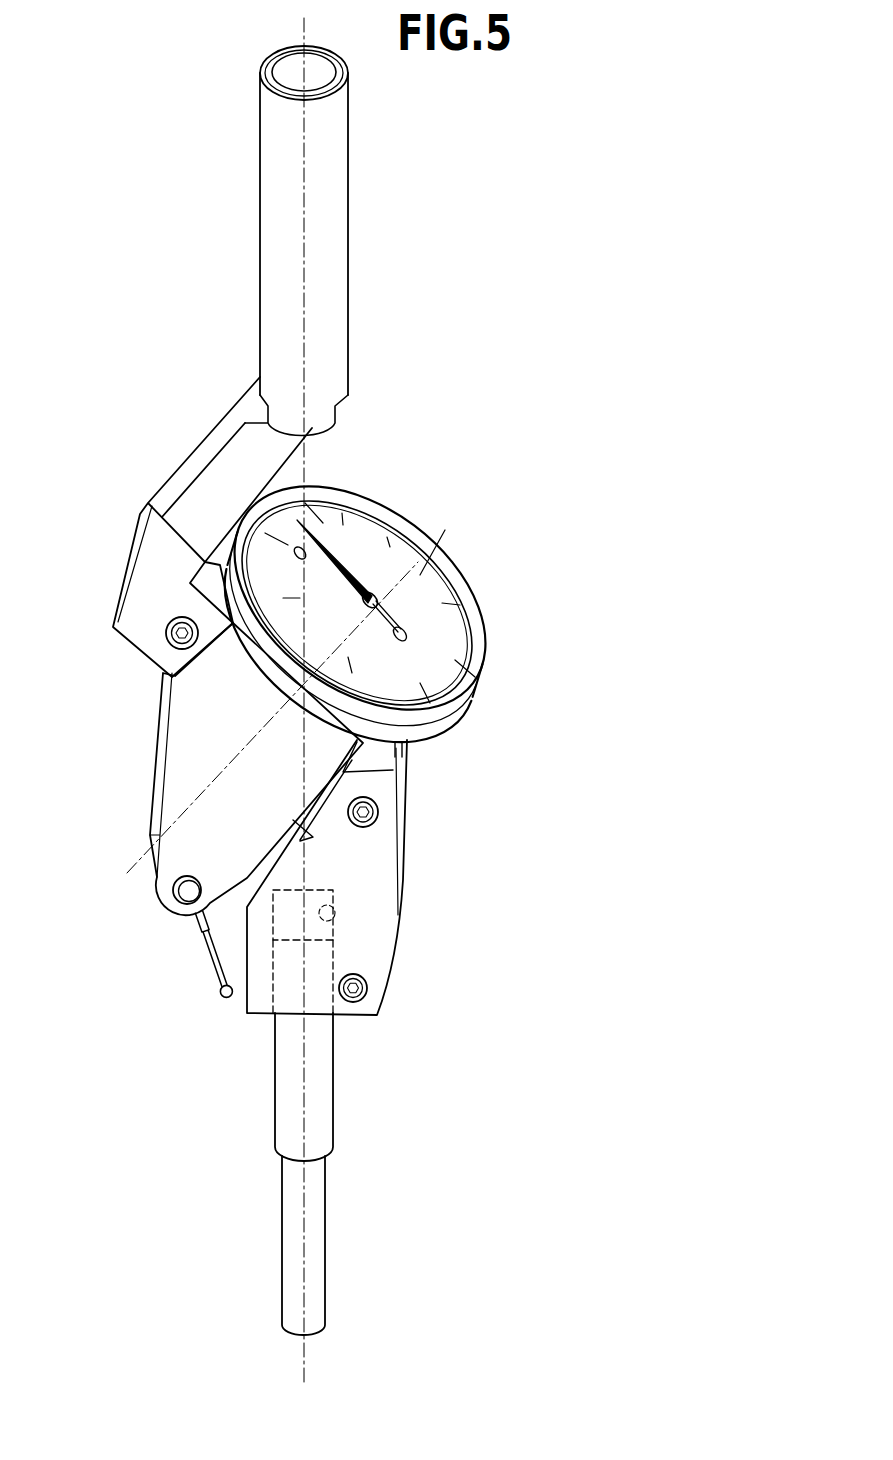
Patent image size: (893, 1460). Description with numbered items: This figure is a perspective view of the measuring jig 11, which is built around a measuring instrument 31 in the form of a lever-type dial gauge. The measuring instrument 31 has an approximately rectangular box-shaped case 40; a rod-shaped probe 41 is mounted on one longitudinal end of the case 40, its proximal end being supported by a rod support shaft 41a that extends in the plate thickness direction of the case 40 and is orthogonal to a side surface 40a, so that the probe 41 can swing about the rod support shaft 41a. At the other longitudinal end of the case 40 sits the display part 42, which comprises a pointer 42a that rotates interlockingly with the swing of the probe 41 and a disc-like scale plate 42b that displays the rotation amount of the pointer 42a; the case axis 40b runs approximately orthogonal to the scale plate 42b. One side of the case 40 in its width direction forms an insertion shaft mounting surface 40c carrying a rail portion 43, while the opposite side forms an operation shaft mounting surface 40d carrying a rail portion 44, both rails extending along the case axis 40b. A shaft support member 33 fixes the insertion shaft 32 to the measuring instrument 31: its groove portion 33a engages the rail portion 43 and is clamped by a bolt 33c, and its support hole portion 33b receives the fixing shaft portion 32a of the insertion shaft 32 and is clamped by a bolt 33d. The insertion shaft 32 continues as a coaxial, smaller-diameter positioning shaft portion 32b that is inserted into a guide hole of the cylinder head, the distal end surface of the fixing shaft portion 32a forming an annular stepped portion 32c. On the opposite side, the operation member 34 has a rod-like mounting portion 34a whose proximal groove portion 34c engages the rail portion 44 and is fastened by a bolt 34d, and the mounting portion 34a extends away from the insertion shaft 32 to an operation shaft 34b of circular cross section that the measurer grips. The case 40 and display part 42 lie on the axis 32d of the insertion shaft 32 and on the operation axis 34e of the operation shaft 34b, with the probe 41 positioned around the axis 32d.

The measuring jig 11 is at (94, 199).
The measuring instrument 31 is at (484, 620).
The insertion shaft 32 is at (282, 1253).
The fixing shaft portion 32a is at (275, 1078).
The positioning shaft portion 32b is at (282, 1288).
The annular stepped portion 32c is at (278, 1160).
The axis of the insertion shaft 32d is at (304, 1217).
The shaft support member 33 is at (408, 883).
The groove portion 33a is at (335, 780).
The support hole portion 33b is at (333, 922).
The bolt 33c is at (380, 812).
The bolt 33d is at (370, 988).
The operation member 34 is at (350, 293).
The mounting portion 34a is at (187, 473).
The operation shaft 34b is at (262, 183).
The groove portion 34c is at (190, 583).
The bolt 34d is at (172, 622).
The operation axis 34e is at (304, 260).
The case 40 is at (152, 855).
The side surface 40a is at (185, 858).
The case axis 40b is at (225, 763).
The insertion shaft mounting surface 40c is at (307, 842).
The operation shaft mounting surface 40d is at (176, 675).
The probe 41 is at (218, 981).
The rod support shaft 41a is at (186, 894).
The display part 42 is at (432, 563).
The pointer 42a is at (362, 527).
The scale plate 42b is at (348, 512).
The rail portion 43 is at (298, 858).
The rail portion 44 is at (168, 667).